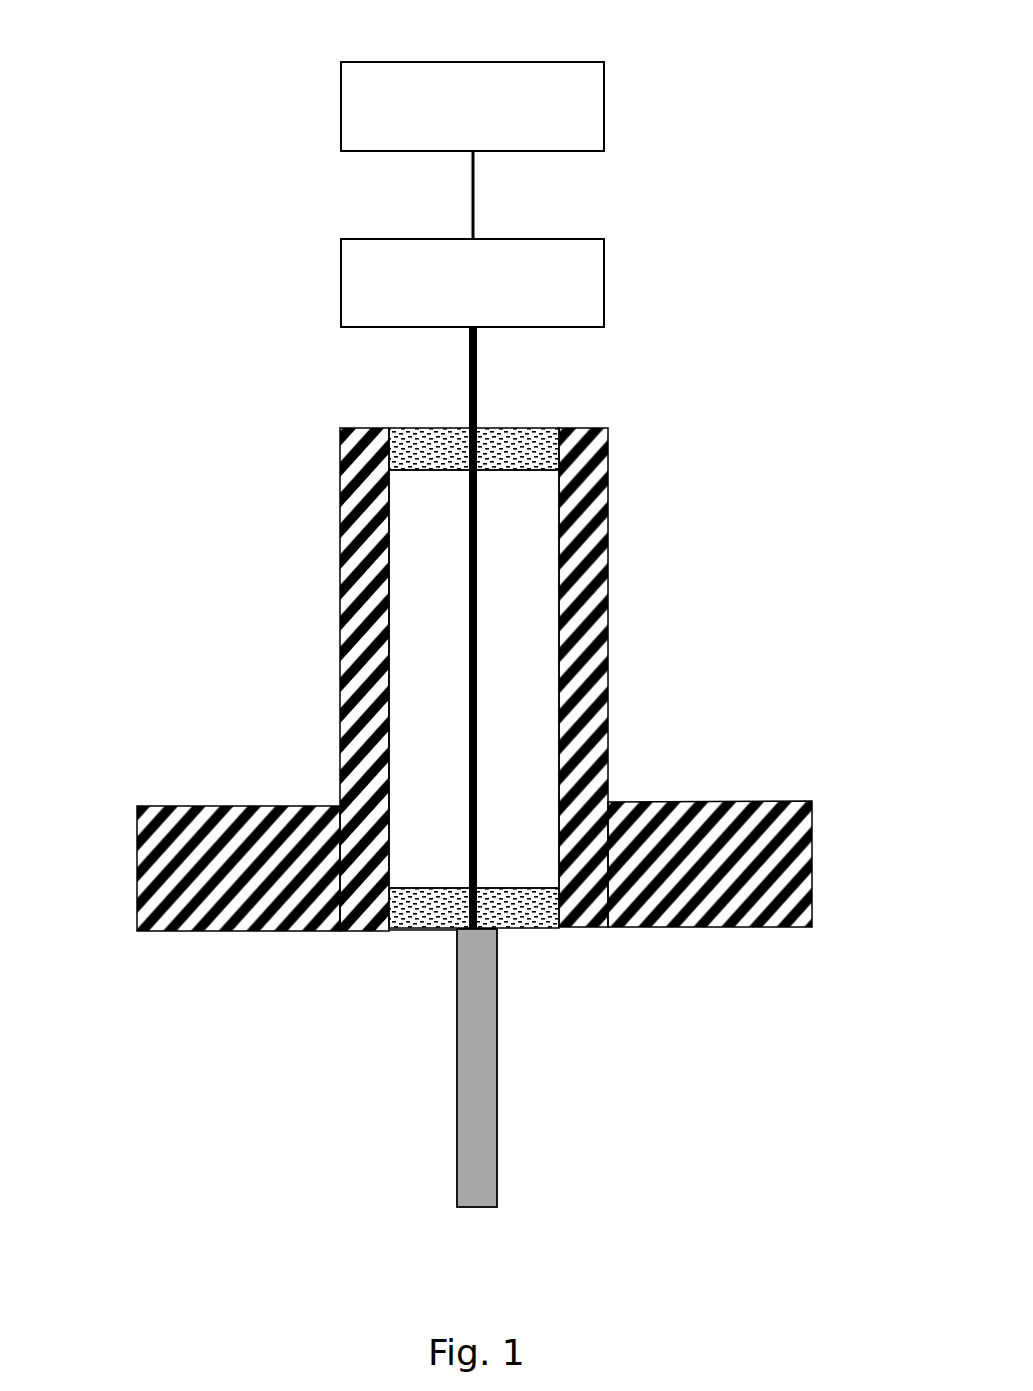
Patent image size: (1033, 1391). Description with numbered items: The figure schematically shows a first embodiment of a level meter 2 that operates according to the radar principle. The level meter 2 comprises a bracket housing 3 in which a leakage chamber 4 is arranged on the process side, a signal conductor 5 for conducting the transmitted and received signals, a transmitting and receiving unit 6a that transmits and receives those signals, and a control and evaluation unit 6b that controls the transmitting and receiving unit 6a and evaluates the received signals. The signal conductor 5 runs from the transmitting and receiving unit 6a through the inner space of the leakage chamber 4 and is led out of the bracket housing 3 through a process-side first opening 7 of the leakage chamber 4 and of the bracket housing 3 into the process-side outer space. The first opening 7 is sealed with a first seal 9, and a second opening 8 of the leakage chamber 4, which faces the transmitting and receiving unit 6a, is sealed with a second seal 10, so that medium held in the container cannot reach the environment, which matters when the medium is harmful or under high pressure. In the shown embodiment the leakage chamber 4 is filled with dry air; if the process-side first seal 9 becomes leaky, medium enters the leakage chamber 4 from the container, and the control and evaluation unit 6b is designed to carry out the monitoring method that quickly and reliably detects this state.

The level meter 2 is at (120, 417).
The bracket housing 3 is at (752, 691).
The leakage chamber 4 is at (541, 556).
The signal conductor 5 is at (497, 1108).
The transmitting and receiving unit 6a is at (604, 280).
The control and evaluation unit 6b is at (604, 113).
The process-side first opening 7 is at (390, 974).
The second opening 8 is at (568, 405).
The first seal 9 is at (445, 887).
The second seal 10 is at (437, 470).